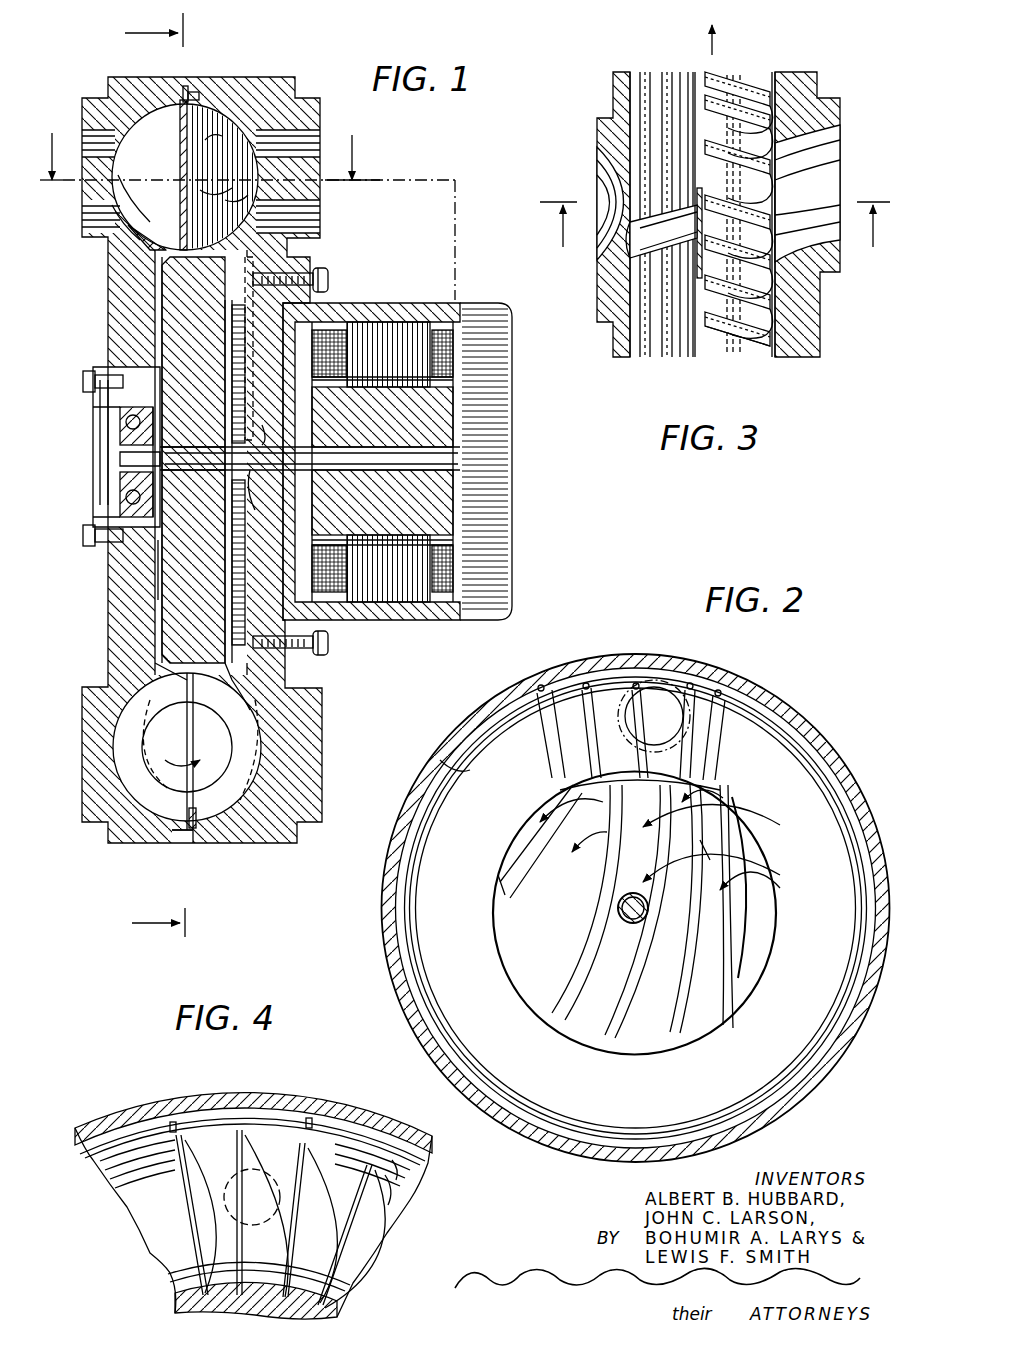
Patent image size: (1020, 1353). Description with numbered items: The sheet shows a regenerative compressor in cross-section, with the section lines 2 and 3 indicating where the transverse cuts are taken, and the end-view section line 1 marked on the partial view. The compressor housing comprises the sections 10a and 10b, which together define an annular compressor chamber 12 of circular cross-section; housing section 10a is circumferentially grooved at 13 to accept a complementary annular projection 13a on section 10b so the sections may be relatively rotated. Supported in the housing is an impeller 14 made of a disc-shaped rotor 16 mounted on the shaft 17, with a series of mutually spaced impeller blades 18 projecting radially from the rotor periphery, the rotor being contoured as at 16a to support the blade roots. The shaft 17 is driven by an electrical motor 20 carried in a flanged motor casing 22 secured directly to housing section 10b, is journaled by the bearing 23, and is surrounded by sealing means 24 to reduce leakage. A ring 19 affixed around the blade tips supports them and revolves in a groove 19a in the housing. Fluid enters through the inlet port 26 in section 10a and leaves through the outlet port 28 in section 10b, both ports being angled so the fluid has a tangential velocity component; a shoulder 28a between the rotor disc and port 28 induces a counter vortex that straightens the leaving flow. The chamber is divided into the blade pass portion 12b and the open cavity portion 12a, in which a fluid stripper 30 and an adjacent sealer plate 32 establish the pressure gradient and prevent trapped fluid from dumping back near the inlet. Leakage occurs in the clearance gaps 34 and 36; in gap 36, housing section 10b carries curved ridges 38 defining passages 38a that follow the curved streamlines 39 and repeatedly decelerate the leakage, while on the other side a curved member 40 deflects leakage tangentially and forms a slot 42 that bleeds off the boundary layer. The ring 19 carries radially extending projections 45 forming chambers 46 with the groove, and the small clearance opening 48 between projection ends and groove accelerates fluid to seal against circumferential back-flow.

In FIG. 3, the section line 1- 1 is at (716, 228).
In FIG. 1, the section line 2- 2 is at (155, 479).
In FIG. 1, the section line 3- 3 is at (242, 216).
In FIG. 1, the housing section 10a is at (136, 92).
In FIG. 3, the housing section 10a is at (615, 85).
In FIG. 1, the housing section 10b is at (270, 82).
In FIG. 3, the housing section 10b is at (818, 88).
In FIG. 2, the housing section 10b is at (775, 707).
In FIG. 1, the annular compressor chamber 12 is at (136, 130).
In FIG. 1, the cavity portion 12a is at (116, 215).
In FIG. 4, the cavity portion 12a is at (297, 1103).
In FIG. 1, the blade pass portion 12b is at (262, 114).
In FIG. 2, the blade pass portion 12b is at (465, 760).
In FIG. 1, the circumferential groove 13 is at (182, 843).
In FIG. 1, the annular projection 13a is at (182, 845).
In FIG. 1, the impeller 14 is at (158, 310).
In FIG. 1, the disc-shaped rotor 16 is at (182, 358).
In FIG. 3, the disc-shaped rotor 16 is at (698, 352).
In FIG. 4, the disc-shaped rotor 16 is at (187, 1302).
In FIG. 1, the rotor contour 16a is at (232, 690).
In FIG. 4, the rotor contour 16a is at (177, 1277).
In FIG. 1, the shaft 17 is at (138, 447).
In FIG. 2, the shaft 17 is at (618, 908).
In FIG. 1, the impeller blades 18 is at (206, 194).
In FIG. 3, the impeller blades 18 is at (752, 84).
In FIG. 2, the impeller blades 18 is at (603, 700).
In FIG. 4, the impeller blades 18 is at (362, 1248).
In FIG. 1, the ring 19 is at (200, 103).
In FIG. 4, the ring 19 is at (392, 1180).
In FIG. 1, the groove 19a is at (189, 98).
In FIG. 4, the groove 19a is at (398, 1165).
In FIG. 1, the electrical motor 20 is at (396, 318).
In FIG. 1, the flanged motor casing 22 is at (497, 528).
In FIG. 1, the bearing 23 is at (115, 484).
In FIG. 1, the sealing means 24 is at (262, 446).
In FIG. 2, the sealing means 24 is at (638, 922).
In FIG. 1, the inlet port 26 is at (112, 192).
In FIG. 3, the inlet port 26 is at (603, 248).
In FIG. 2, the inlet port 26 is at (565, 685).
In FIG. 1, the outlet port 28 is at (300, 206).
In FIG. 3, the outlet port 28 is at (832, 158).
In FIG. 2, the outlet port 28 is at (655, 690).
In FIG. 1, the shoulder 28a is at (275, 250).
In FIG. 3, the fluid stripper 30 is at (660, 222).
In FIG. 1, the sealer plate 32 is at (179, 158).
In FIG. 3, the sealer plate 32 is at (697, 206).
In FIG. 1, the clearance gap 34 is at (158, 560).
In FIG. 1, the clearance gap 36 is at (237, 642).
In FIG. 3, the clearance gap 36 is at (740, 326).
In FIG. 1, the curved ridges 38 is at (232, 303).
In FIG. 2, the curved ridges 38 is at (622, 992).
In FIG. 1, the passages 38a is at (250, 522).
In FIG. 2, the passages 38a is at (515, 918).
In FIG. 2, the flow streamlines 39 is at (700, 785).
In FIG. 1, the curved member 40 is at (146, 243).
In FIG. 3, the curved member 40 is at (670, 78).
In FIG. 1, the slot 42 is at (110, 194).
In FIG. 1, the radially extending projections 45 is at (197, 828).
In FIG. 4, the radially extending projections 45 is at (172, 1125).
In FIG. 4, the chambers 46 is at (215, 1118).
In FIG. 4, the clearance opening 48 is at (245, 1120).